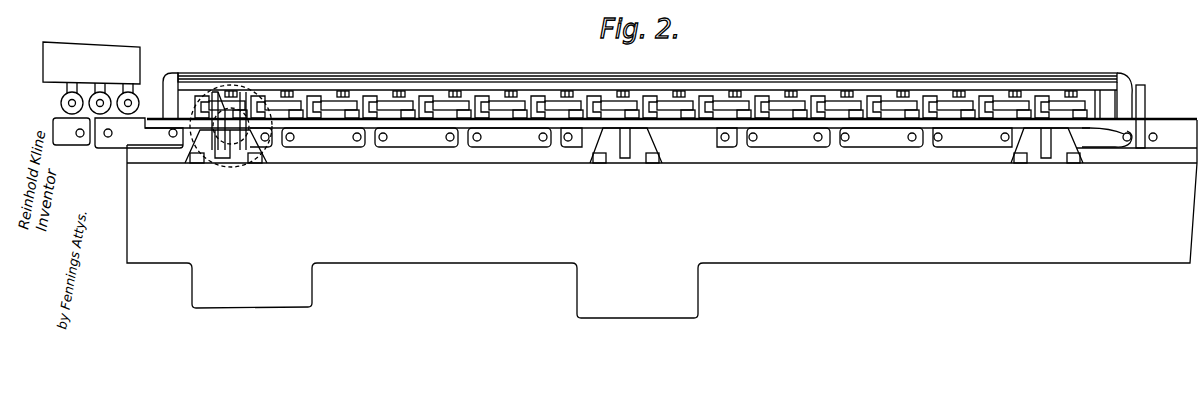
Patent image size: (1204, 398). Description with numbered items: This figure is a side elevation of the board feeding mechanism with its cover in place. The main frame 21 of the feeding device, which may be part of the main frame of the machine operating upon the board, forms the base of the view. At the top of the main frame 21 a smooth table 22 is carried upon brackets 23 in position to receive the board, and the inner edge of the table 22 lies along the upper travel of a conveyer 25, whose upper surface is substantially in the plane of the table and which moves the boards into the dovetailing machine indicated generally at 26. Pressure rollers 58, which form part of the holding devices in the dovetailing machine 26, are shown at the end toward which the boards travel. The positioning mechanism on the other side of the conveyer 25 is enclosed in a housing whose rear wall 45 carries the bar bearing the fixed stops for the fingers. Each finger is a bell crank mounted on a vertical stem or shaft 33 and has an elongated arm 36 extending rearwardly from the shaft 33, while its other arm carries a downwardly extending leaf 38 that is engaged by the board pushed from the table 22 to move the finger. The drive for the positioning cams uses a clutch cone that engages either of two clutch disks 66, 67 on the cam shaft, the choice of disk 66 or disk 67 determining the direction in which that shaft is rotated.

The main frame 21 is at (888, 248).
The table 22 is at (647, 63).
The brackets 23 is at (235, 166).
The conveyer 25 is at (147, 118).
The dovetailing machine 26 is at (138, 60).
The vertical stem or shaft 33 is at (1096, 97).
The arm 36 is at (423, 98).
The downwardly extending leaf 38 is at (303, 106).
The rear wall 45 is at (368, 75).
The pressure rollers 58 is at (98, 90).
The clutch disk 66 is at (243, 95).
The clutch disk 67 is at (223, 100).